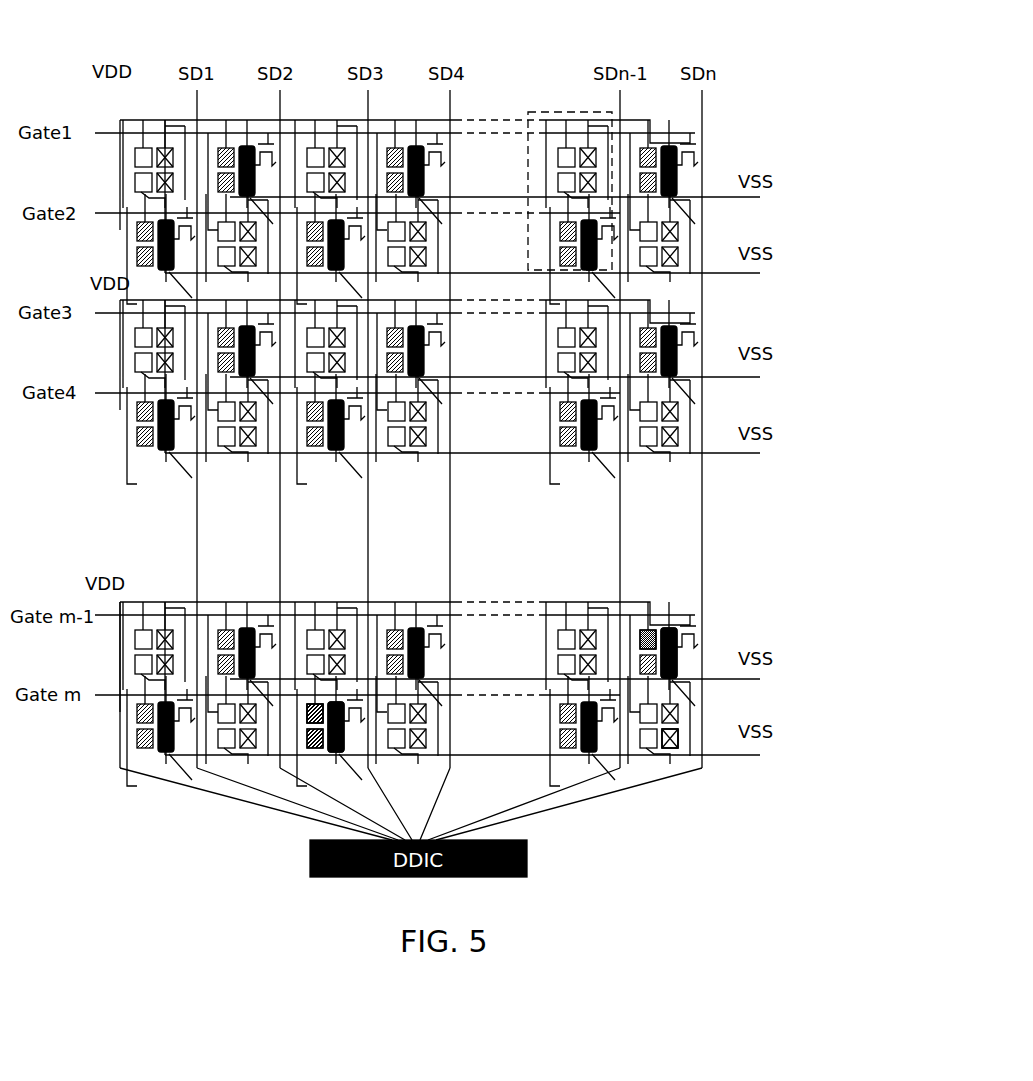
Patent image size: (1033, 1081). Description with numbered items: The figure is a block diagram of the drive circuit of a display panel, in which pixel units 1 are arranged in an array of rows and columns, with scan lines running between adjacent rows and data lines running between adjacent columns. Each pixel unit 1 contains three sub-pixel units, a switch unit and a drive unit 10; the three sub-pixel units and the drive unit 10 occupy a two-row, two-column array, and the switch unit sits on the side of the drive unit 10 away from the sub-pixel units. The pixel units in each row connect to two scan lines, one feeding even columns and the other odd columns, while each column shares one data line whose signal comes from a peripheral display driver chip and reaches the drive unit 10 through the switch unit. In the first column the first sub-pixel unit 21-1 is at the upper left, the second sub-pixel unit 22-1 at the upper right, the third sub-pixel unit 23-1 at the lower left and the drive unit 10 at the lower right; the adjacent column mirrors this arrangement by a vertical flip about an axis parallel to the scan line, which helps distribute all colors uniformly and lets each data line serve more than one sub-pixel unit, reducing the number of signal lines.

The pixel unit 1 is at (530, 112).
The drive unit 10 is at (678, 665).
The first sub-pixel unit 21-1 is at (680, 745).
The second sub-pixel unit 22-1 is at (668, 735).
The third sub-pixel unit 23-1 is at (675, 632).